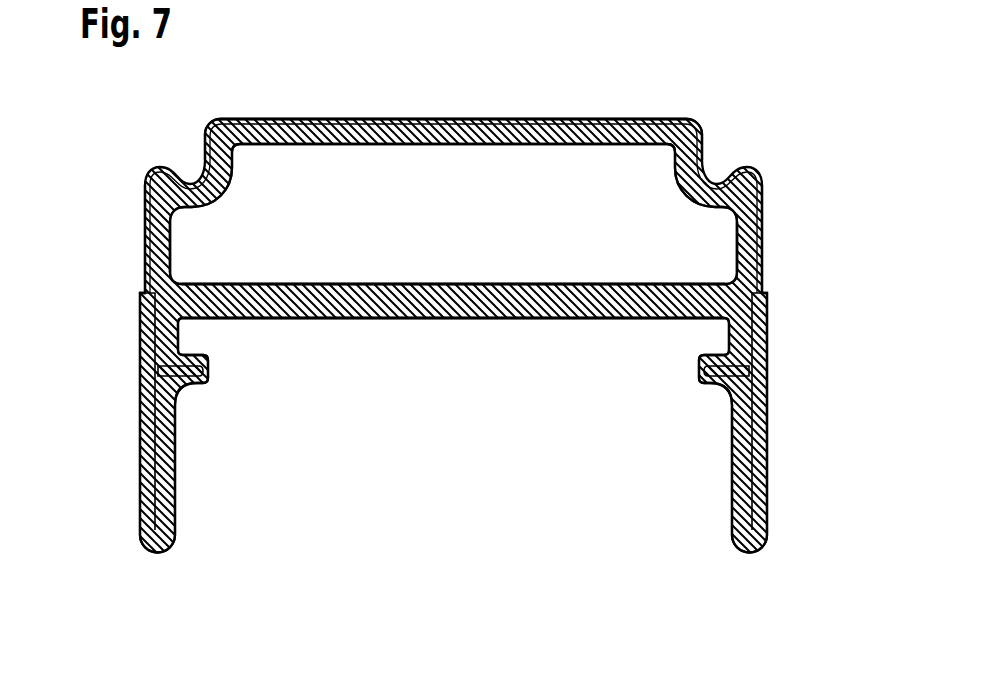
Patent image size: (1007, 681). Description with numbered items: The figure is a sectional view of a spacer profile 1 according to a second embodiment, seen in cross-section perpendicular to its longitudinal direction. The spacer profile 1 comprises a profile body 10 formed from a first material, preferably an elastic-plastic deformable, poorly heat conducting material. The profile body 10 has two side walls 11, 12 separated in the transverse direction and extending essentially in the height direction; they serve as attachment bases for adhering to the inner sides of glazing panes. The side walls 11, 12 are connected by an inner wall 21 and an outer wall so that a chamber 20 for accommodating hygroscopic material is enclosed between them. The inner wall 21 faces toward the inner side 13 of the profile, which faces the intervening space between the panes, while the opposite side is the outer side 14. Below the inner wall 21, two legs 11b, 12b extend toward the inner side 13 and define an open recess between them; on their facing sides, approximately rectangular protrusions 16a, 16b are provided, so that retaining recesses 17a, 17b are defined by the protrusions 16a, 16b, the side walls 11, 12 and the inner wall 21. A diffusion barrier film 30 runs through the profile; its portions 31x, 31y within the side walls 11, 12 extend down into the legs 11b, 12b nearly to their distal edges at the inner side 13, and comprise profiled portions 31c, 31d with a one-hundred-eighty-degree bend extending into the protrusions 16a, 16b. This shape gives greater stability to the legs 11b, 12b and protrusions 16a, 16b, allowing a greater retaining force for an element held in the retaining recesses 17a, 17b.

The spacer profile 1 is at (747, 128).
The profile body 10 is at (562, 119).
The side wall 11 is at (143, 223).
The side wall 12 is at (764, 223).
The leg 11b is at (145, 487).
The leg 12b is at (762, 487).
The inner side 13 is at (550, 498).
The outer side 14 is at (337, 110).
The protrusion 16a is at (183, 390).
The protrusion 16b is at (724, 390).
The retaining recess 17a is at (190, 333).
The retaining recess 17b is at (717, 333).
The chamber 20 is at (553, 226).
The inner wall 21 is at (384, 300).
The barrier film 30 is at (458, 119).
The profiled portion 31c is at (205, 373).
The profiled portion 31d is at (702, 373).
The barrier film portion 31x is at (140, 327).
The barrier film portion 31y is at (767, 327).